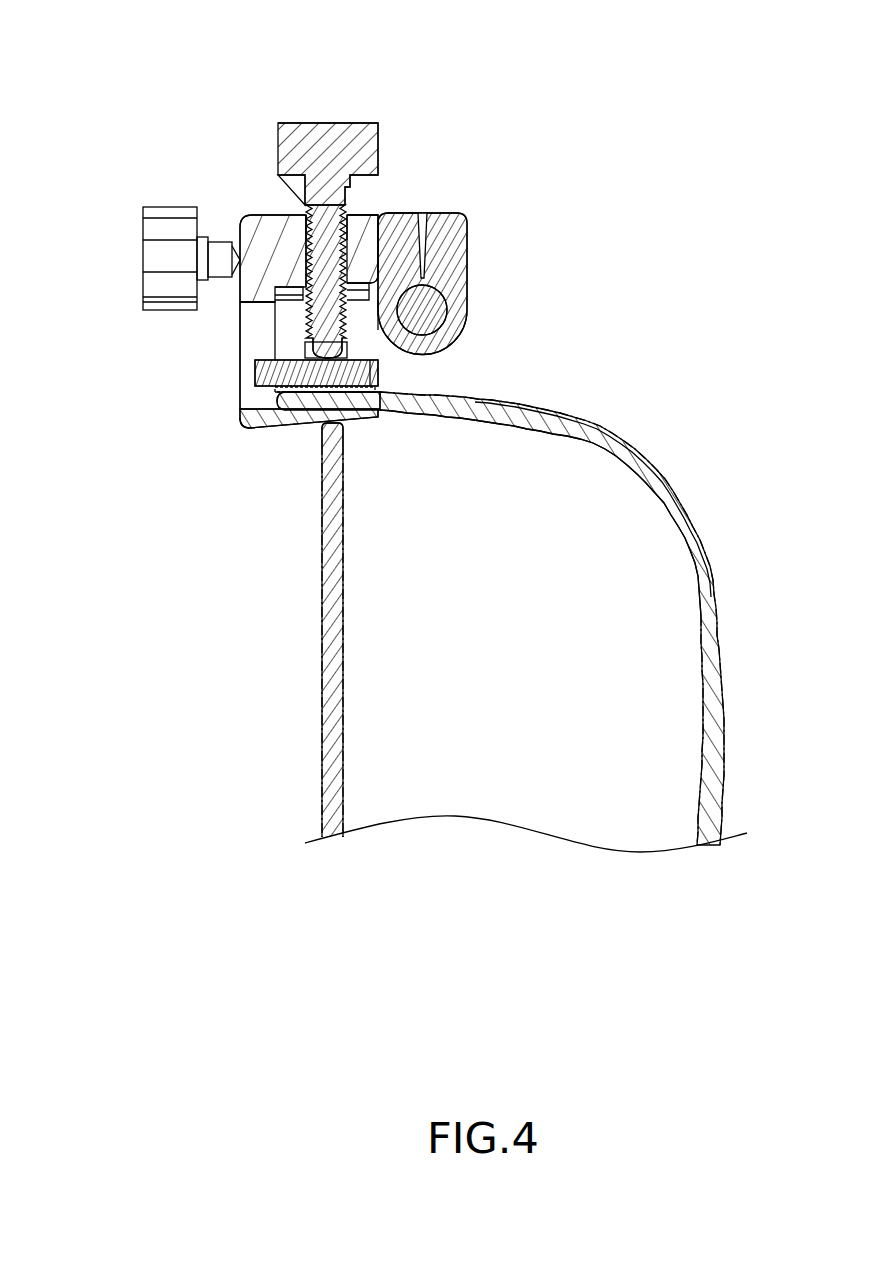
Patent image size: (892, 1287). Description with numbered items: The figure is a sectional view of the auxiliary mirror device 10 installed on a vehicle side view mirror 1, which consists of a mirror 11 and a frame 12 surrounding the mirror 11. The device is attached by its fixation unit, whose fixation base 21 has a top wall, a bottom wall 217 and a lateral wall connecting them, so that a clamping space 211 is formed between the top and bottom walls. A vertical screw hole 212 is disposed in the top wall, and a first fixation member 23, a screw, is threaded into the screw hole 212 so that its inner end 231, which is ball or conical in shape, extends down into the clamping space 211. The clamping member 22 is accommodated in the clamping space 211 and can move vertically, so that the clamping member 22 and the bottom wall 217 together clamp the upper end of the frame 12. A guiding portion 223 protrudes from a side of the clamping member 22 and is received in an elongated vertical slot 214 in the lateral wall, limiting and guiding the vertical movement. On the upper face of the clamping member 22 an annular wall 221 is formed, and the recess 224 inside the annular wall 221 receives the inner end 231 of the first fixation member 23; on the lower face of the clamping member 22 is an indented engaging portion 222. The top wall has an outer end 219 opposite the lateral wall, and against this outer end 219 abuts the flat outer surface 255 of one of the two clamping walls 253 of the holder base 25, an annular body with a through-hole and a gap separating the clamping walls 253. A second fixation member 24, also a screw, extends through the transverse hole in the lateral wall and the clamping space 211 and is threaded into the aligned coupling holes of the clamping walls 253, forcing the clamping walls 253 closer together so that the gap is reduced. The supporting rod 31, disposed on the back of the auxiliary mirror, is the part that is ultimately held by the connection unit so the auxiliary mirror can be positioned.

The vehicle side view mirror 1 is at (708, 522).
The auxiliary mirror device 10 is at (615, 245).
The mirror 11 is at (321, 666).
The frame 12 is at (284, 398).
The fixation base 21 is at (265, 309).
The clamping space 211 is at (285, 308).
The vertical screw hole 212 is at (312, 213).
The elongated vertical slot 214 is at (245, 324).
The bottom wall 217 is at (310, 418).
The outer end 219 is at (373, 217).
The clamping member 22 is at (399, 365).
The annular wall 221 is at (348, 340).
The indented engaging portion 222 is at (277, 388).
The guiding portion 223 is at (257, 376).
The recess 224 is at (392, 323).
The first fixation member 23 is at (262, 202).
The inner end 231 is at (306, 345).
The second fixation member 24 is at (162, 213).
The holder base 25 is at (482, 235).
The clamping walls 253 is at (428, 214).
The flat outer surface 255 is at (392, 213).
The supporting rod 31 is at (447, 307).